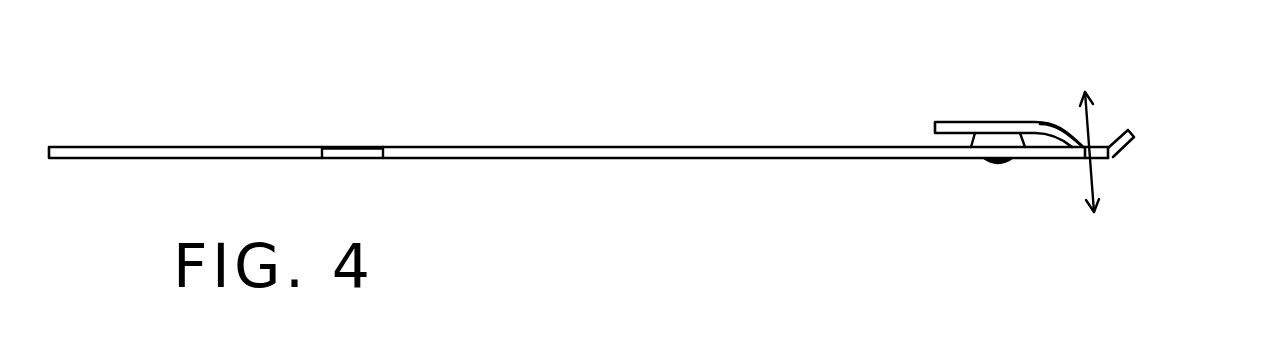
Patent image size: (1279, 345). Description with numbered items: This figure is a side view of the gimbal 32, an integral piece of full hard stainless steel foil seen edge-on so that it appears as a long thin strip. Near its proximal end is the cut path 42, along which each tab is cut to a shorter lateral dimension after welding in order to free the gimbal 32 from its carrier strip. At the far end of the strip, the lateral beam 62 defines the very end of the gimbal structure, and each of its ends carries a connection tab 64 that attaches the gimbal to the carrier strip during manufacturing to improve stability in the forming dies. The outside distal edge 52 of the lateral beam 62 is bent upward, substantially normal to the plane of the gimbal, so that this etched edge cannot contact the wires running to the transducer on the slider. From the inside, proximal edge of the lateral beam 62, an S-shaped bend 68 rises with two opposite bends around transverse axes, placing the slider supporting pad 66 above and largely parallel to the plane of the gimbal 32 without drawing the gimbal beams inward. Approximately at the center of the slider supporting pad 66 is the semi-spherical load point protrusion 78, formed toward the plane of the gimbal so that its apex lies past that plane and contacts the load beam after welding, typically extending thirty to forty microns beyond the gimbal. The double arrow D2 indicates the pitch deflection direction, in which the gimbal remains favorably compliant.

The gimbal 32 is at (478, 147).
The cut path 42 is at (350, 153).
The distal edge 52 is at (1133, 133).
The lateral beam 62 is at (1108, 156).
The connection tab 64 is at (1087, 156).
The slider supporting pad 66 is at (953, 121).
The S-shaped bend 68 is at (1067, 130).
The load point protrusion 78 is at (993, 163).
The pitch deflection direction D2 is at (1107, 130).